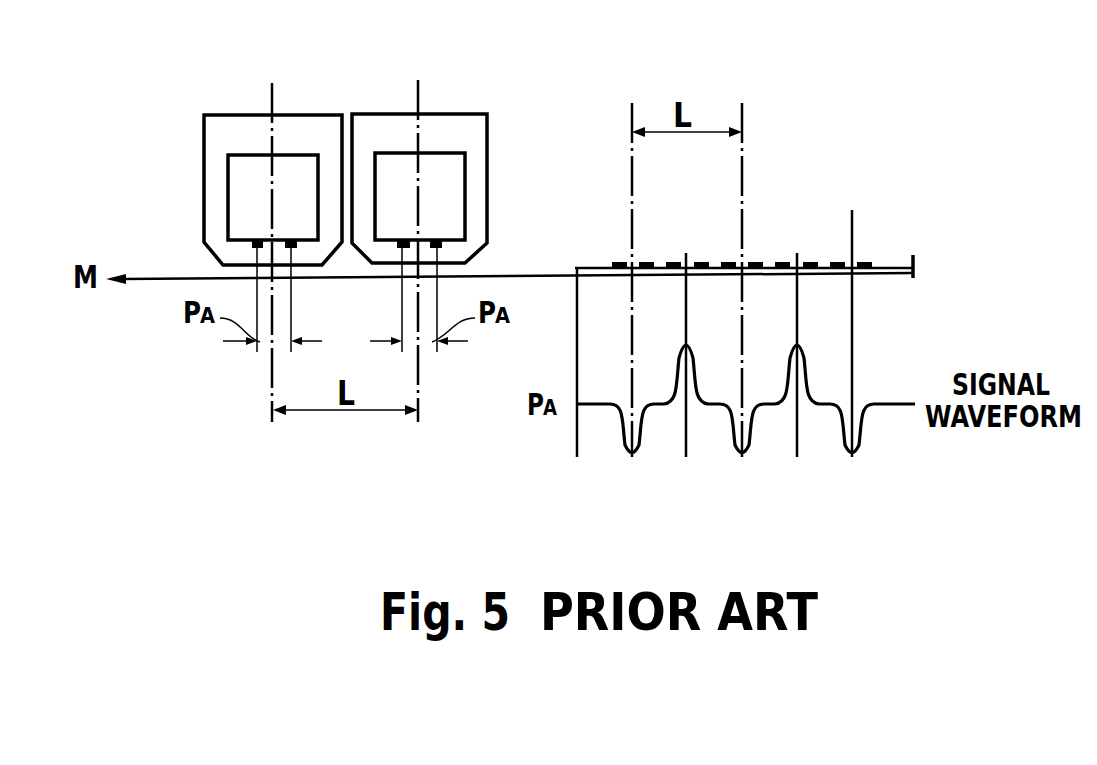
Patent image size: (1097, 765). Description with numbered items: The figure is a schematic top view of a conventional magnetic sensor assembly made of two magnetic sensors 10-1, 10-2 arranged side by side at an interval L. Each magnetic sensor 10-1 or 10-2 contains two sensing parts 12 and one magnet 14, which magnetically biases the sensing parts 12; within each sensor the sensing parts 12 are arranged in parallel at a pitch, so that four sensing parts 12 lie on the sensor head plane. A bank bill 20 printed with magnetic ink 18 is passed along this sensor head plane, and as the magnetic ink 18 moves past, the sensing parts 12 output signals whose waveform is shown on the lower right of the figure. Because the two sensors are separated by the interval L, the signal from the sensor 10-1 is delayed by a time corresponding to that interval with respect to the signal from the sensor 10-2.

The magnetic sensor 10-1 is at (355, 38).
The magnetic sensor 10-2 is at (502, 37).
The sensing part 12 is at (254, 246).
The magnet 14 is at (228, 181).
The magnetic ink 18 is at (862, 262).
The bank bill 20 is at (880, 273).